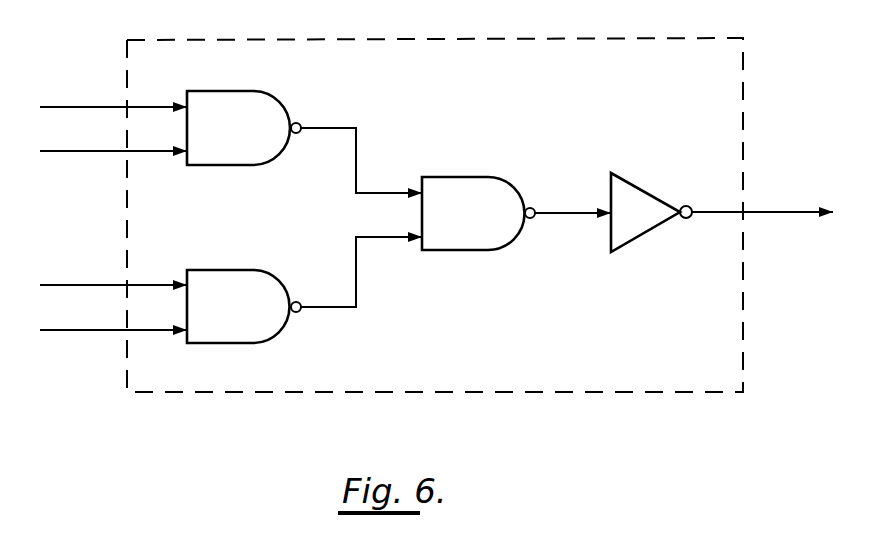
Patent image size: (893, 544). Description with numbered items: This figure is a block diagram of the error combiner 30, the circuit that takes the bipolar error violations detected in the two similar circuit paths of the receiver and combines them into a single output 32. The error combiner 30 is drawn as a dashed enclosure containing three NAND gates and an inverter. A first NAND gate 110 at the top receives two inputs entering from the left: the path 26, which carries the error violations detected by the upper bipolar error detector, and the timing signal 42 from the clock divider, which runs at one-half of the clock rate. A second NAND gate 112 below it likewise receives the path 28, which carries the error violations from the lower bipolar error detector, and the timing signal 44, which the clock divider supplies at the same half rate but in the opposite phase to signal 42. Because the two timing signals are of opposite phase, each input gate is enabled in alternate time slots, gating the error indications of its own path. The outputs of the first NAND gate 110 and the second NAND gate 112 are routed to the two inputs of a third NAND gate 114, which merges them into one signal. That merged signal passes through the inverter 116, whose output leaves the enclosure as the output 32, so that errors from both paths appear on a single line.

The error combiner 30 is at (641, 86).
The NAND gate 110 is at (214, 91).
The NAND gate 112 is at (214, 270).
The NAND gate 114 is at (448, 178).
The inverter 116 is at (628, 182).
The path 26 is at (62, 107).
The clock divider output 42 is at (62, 151).
The path 28 is at (63, 285).
The clock divider output 44 is at (63, 330).
The output 32 is at (775, 212).